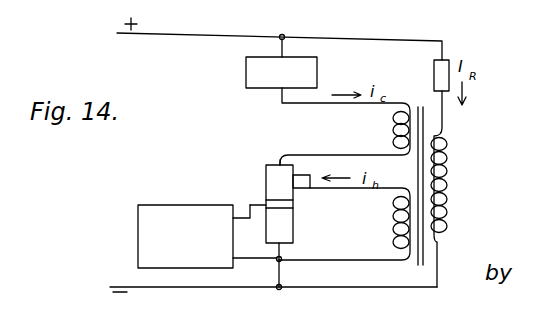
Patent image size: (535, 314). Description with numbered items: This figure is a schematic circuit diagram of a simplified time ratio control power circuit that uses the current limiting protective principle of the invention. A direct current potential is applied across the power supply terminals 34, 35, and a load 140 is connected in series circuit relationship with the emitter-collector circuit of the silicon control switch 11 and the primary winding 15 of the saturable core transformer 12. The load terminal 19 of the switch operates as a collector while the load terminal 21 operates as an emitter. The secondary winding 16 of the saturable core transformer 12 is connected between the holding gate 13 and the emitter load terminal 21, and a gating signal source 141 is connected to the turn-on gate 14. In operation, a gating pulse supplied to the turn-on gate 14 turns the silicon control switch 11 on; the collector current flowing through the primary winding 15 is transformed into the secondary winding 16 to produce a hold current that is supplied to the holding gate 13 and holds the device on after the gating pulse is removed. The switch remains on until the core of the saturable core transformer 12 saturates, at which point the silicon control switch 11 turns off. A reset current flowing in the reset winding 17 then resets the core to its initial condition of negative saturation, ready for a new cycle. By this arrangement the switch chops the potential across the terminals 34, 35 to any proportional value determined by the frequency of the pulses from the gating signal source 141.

The power supply terminal 34 is at (212, 35).
The load 140 is at (246, 70).
The saturable core transformer 12 is at (478, 150).
The primary winding 15 is at (393, 135).
The reset winding 17 is at (447, 186).
The load terminal 19 is at (279, 164).
The silicon control switch 11 is at (256, 183).
The holding gate 13 is at (306, 188).
The turn-on gate 14 is at (293, 204).
The secondary winding 16 is at (393, 228).
The load terminal 21 is at (285, 243).
The gating signal source 141 is at (138, 224).
The power supply terminal 35 is at (132, 284).